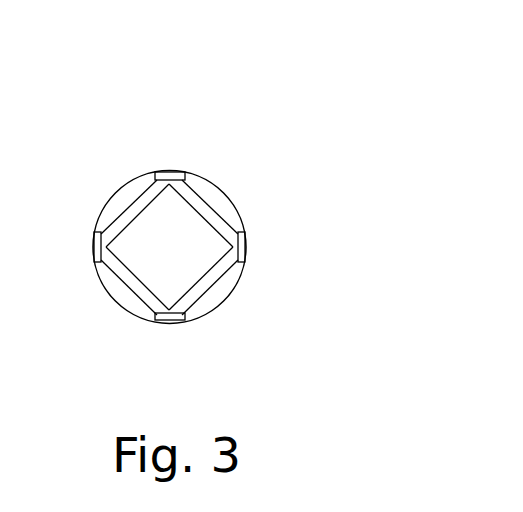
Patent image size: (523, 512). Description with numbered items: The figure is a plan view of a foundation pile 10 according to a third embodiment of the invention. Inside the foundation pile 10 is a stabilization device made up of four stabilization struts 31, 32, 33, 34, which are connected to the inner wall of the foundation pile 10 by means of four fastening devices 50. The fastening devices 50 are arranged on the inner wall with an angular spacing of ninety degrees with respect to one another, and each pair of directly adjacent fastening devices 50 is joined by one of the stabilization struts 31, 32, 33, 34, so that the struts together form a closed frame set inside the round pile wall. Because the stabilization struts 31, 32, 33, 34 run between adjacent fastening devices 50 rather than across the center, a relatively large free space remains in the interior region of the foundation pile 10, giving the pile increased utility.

The foundation pile 10 is at (248, 162).
The stabilization strut 31 is at (212, 286).
The stabilization strut 32 is at (133, 283).
The stabilization strut 33 is at (134, 203).
The stabilization strut 34 is at (215, 213).
The fastening device 50 is at (172, 172).